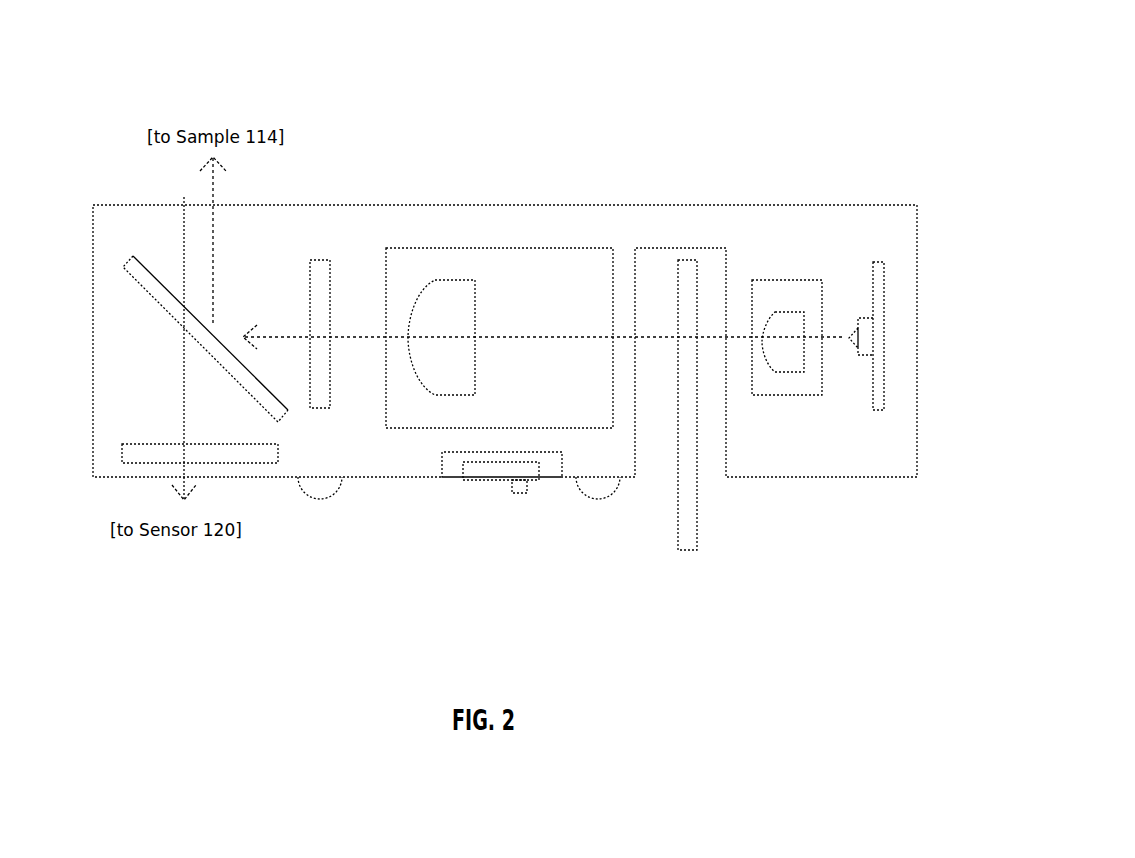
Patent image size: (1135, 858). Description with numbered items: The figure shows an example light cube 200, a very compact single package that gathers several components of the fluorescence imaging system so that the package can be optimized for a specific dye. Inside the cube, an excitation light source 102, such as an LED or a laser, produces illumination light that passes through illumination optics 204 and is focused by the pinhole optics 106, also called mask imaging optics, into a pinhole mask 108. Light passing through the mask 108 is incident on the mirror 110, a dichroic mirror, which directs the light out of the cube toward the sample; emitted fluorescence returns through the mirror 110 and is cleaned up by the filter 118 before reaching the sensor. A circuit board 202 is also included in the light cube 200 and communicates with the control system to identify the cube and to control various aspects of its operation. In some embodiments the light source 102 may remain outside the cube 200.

The light cube 200 is at (800, 98).
The light source 102 is at (896, 277).
The illumination optics 204 is at (793, 260).
The pinhole mask 108 is at (719, 535).
The pinhole optics 106 is at (499, 338).
The filter 118 is at (315, 409).
The mirror 110 is at (172, 322).
The circuit board 202 is at (494, 497).